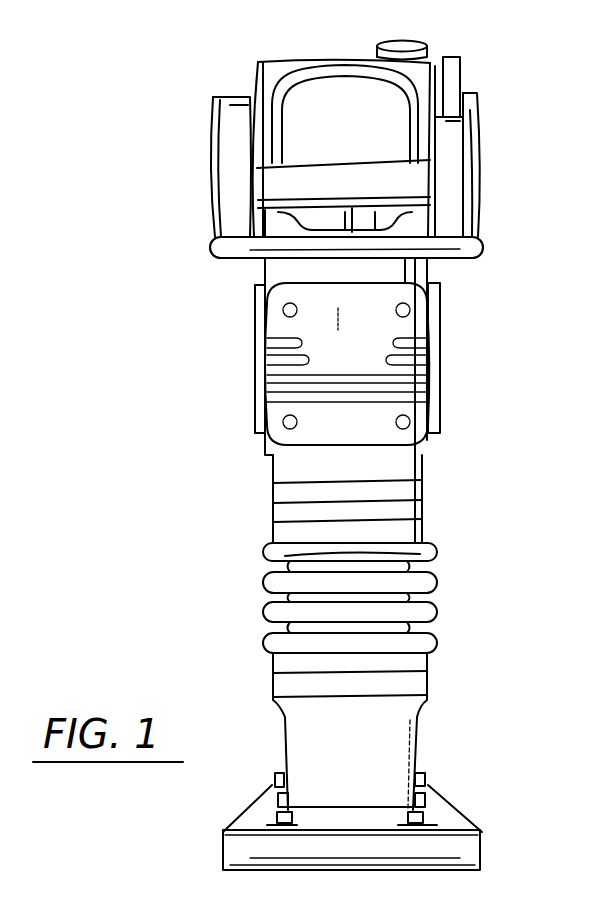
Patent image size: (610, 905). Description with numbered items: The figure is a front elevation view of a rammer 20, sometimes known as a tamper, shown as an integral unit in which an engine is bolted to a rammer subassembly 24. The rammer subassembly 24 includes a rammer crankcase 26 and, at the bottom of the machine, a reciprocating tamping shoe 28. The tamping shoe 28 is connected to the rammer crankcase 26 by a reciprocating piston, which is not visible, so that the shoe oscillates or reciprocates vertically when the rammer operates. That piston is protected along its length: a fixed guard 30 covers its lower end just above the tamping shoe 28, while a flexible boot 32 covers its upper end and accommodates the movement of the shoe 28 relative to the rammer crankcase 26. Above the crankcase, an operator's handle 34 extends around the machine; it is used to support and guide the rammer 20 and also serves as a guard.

The rammer 20 is at (556, 93).
The operator's handle 34 is at (483, 245).
The rammer crankcase 26 is at (400, 343).
The rammer subassembly 24 is at (426, 516).
The flexible boot 32 is at (437, 612).
The fixed guard 30 is at (392, 743).
The tamping shoe 28 is at (470, 843).